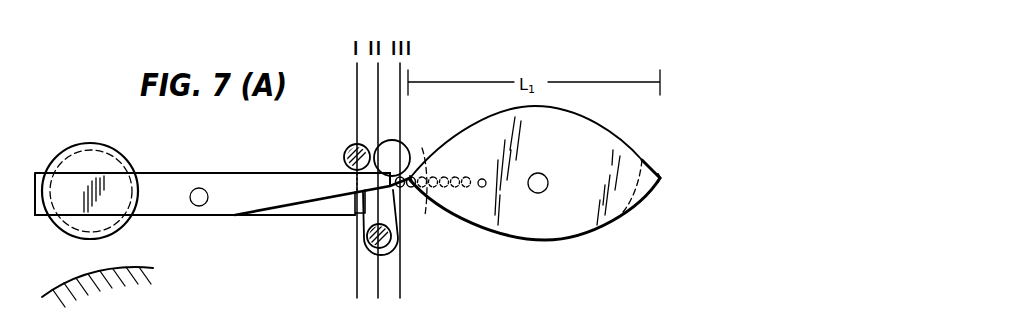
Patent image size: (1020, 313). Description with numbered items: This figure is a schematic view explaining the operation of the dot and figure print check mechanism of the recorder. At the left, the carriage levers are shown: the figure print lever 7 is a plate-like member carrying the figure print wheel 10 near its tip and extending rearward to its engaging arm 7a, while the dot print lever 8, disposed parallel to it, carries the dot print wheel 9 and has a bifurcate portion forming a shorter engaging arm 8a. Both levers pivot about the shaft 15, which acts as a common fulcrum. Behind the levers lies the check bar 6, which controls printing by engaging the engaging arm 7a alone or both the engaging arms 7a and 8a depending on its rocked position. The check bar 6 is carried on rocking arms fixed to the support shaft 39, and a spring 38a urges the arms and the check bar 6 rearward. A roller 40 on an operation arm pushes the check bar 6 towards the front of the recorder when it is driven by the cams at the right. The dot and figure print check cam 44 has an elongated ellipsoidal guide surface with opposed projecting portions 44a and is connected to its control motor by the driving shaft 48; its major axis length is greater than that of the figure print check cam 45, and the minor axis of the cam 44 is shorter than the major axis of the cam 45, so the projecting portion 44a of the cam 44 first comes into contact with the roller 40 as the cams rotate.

The figure print wheel 10 is at (62, 152).
The dot print wheel 9 is at (120, 162).
The shaft 15 is at (199, 188).
The figure print lever 7 is at (240, 186).
The engaging arm 7a is at (332, 197).
The dot print lever 8 is at (290, 207).
The engaging arm 8a is at (337, 215).
The check bar 6 is at (348, 147).
The roller 40 is at (405, 145).
The support shaft 39 is at (365, 240).
The spring 38a is at (414, 190).
The dot and figure print check cam 44 is at (622, 206).
The projecting portion 44a is at (422, 150).
The figure print check cam 45 is at (481, 224).
The driving shaft 48 is at (540, 174).